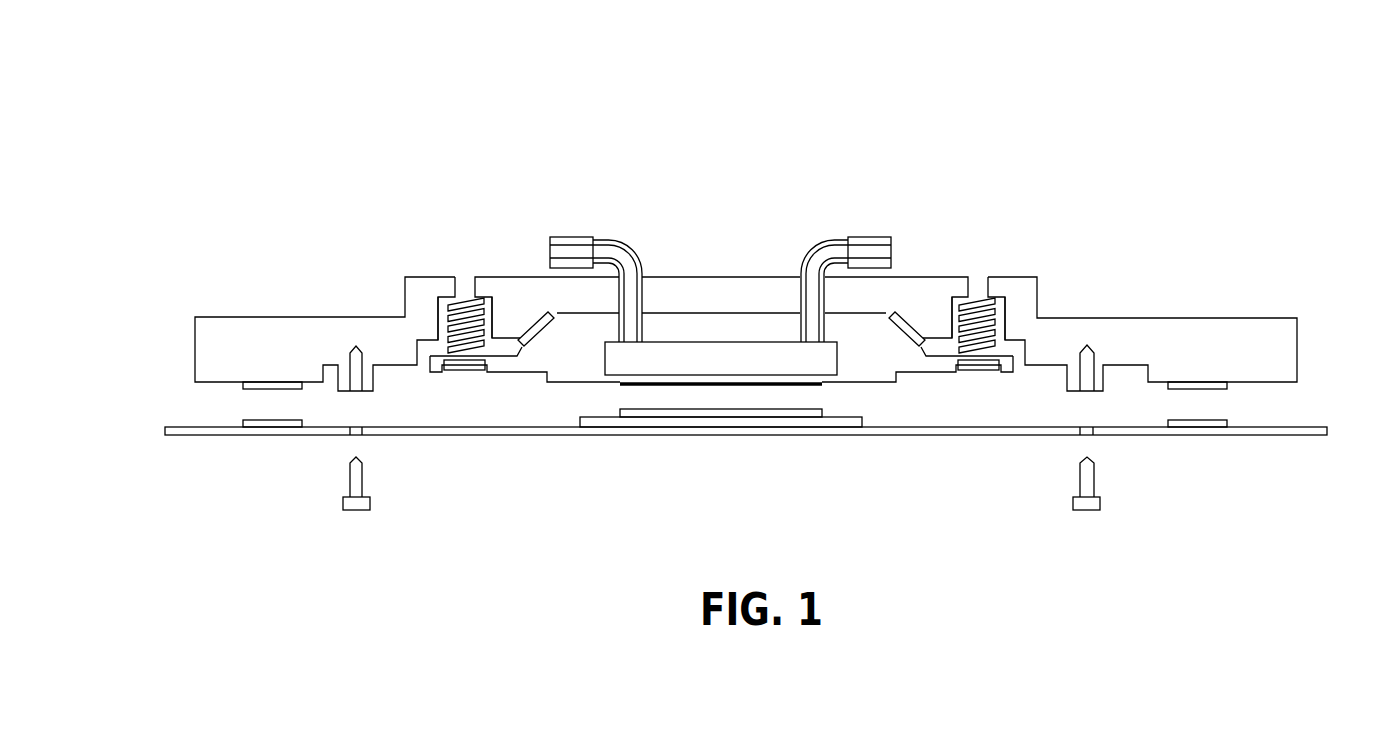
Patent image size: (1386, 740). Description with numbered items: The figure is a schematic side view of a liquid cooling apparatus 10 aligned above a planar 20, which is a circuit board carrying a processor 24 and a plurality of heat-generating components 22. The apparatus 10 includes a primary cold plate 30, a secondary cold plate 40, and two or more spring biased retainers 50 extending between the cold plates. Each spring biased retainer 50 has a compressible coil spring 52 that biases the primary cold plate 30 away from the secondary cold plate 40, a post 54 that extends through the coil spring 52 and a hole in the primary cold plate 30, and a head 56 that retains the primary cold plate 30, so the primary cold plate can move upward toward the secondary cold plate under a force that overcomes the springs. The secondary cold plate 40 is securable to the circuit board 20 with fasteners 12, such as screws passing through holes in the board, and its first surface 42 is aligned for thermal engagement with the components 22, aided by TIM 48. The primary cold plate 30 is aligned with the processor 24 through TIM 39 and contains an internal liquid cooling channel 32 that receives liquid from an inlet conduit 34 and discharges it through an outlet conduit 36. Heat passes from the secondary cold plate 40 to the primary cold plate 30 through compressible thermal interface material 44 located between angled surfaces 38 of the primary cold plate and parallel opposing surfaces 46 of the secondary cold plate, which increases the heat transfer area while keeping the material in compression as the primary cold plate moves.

The liquid cooling apparatus 10 is at (386, 143).
The fastener 12 is at (372, 490).
The planar 20 is at (448, 430).
The heat-generating component 22 is at (306, 418).
The processor 24 is at (800, 410).
The primary cold plate 30 is at (693, 313).
The internal liquid cooling channel 32 is at (733, 352).
The inlet conduit 34 is at (578, 237).
The outlet conduit 36 is at (863, 237).
The surface 38 is at (548, 335).
The thermal interface material 39 is at (645, 387).
The secondary cold plate 40 is at (410, 277).
The first surface 42 is at (213, 383).
The compressible thermal interface material 44 is at (533, 348).
The opposing surface 46 is at (545, 313).
The thermal interface material 48 is at (258, 392).
The spring biased retainer 50 is at (466, 296).
The compressible coil spring 52 is at (493, 314).
The post 54 is at (437, 323).
The head 56 is at (462, 372).